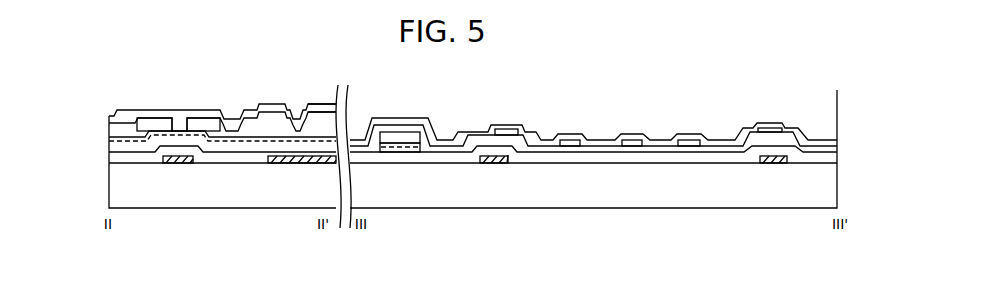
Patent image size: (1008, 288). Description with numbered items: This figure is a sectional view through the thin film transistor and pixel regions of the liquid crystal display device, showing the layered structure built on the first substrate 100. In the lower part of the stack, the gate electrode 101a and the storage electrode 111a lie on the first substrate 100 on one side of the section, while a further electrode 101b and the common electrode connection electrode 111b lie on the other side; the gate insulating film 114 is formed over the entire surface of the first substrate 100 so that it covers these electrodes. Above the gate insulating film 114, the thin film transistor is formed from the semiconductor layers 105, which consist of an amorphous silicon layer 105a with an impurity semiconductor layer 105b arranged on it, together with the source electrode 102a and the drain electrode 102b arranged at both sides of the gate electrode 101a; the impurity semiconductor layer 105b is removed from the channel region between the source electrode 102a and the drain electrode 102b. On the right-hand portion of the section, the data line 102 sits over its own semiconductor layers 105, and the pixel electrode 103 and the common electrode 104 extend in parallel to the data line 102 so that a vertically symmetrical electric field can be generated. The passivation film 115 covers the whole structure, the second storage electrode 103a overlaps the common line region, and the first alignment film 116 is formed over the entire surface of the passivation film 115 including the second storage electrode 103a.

The first substrate 100 is at (109, 195).
The gate insulating film 114 is at (109, 158).
The gate electrode 101a is at (175, 163).
The storage electrode 111a is at (290, 163).
The second light shielding electrode 101b is at (497, 163).
The common electrode connection electrode 111b is at (775, 163).
The semiconductor layers 105 is at (233, 202).
The amorphous silicon layer 105a is at (109, 146).
The impurity semiconductor layer 105b is at (109, 141).
The source electrode 102a is at (128, 137).
The drain electrode 102b is at (205, 126).
The data line 102 is at (390, 136).
The passivation film 115 is at (163, 118).
The first alignment film 116 is at (258, 105).
The second storage electrode 103a is at (309, 110).
The pixel electrode 103 is at (571, 141).
The common electrode 104 is at (505, 129).